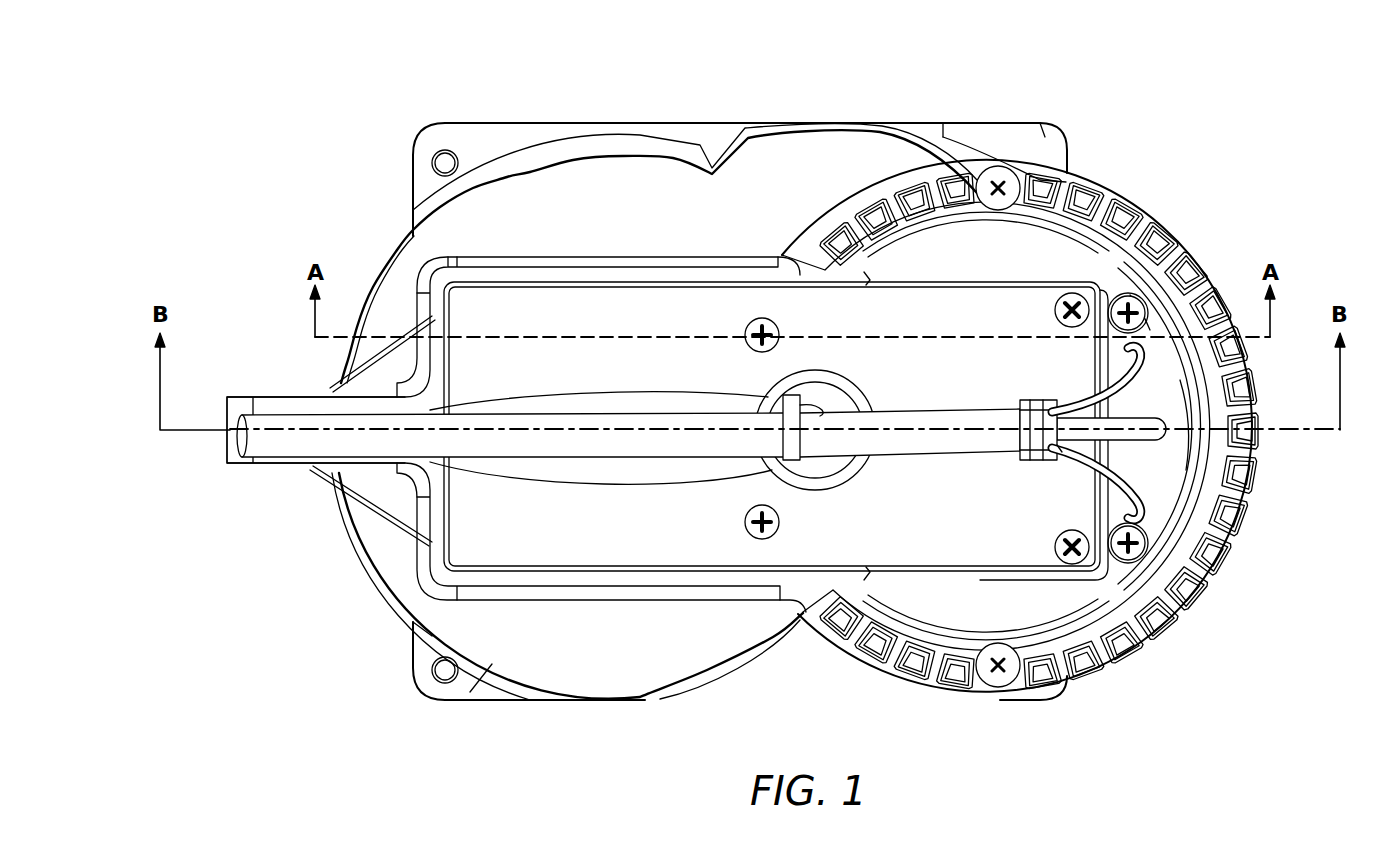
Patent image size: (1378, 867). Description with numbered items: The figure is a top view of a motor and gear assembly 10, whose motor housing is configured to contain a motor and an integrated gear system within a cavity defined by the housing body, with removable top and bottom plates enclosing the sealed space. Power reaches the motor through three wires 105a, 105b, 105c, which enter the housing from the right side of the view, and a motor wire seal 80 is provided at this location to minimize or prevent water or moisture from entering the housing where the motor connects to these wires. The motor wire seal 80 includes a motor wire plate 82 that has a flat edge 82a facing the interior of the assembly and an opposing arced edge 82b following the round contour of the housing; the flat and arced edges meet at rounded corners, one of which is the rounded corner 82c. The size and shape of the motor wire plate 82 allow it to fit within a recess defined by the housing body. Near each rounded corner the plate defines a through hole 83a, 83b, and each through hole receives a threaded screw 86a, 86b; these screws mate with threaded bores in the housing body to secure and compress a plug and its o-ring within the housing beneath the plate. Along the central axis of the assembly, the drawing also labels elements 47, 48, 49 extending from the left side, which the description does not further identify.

The motor and gear assembly 10 is at (742, 95).
The output shaft 47 is at (310, 445).
The shaft clamp 48 is at (503, 450).
The shaft sleeve 49 is at (316, 451).
The motor wire seal 80 is at (1172, 476).
The motor wire plate 82 is at (1168, 402).
The flat edge 82a is at (1061, 452).
The arced edge 82b is at (1197, 440).
The rounded corner 82c is at (1142, 288).
The through hole 83a is at (1143, 297).
The through hole 83b is at (1163, 552).
The threaded screw 86a is at (1113, 307).
The threaded screw 86b is at (1117, 562).
The wire 105a is at (1047, 379).
The wire 105b is at (1077, 441).
The wire 105c is at (1058, 377).